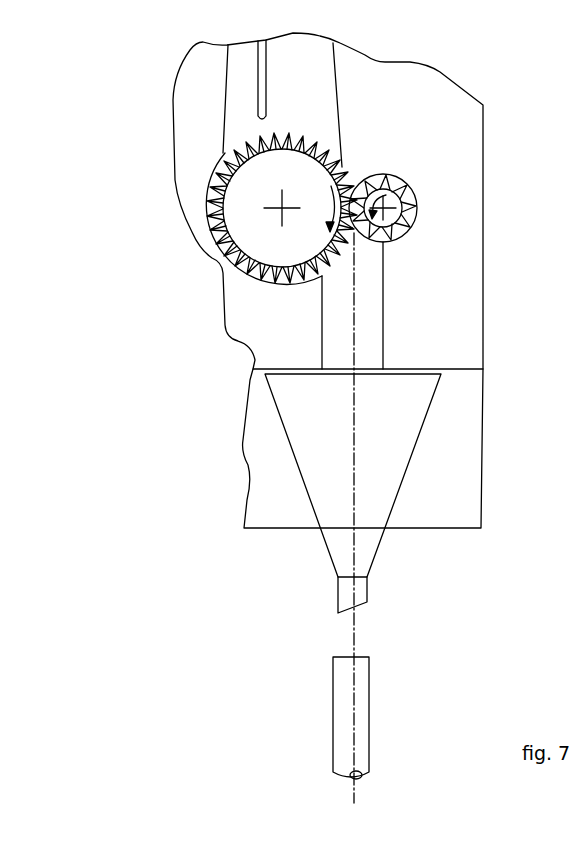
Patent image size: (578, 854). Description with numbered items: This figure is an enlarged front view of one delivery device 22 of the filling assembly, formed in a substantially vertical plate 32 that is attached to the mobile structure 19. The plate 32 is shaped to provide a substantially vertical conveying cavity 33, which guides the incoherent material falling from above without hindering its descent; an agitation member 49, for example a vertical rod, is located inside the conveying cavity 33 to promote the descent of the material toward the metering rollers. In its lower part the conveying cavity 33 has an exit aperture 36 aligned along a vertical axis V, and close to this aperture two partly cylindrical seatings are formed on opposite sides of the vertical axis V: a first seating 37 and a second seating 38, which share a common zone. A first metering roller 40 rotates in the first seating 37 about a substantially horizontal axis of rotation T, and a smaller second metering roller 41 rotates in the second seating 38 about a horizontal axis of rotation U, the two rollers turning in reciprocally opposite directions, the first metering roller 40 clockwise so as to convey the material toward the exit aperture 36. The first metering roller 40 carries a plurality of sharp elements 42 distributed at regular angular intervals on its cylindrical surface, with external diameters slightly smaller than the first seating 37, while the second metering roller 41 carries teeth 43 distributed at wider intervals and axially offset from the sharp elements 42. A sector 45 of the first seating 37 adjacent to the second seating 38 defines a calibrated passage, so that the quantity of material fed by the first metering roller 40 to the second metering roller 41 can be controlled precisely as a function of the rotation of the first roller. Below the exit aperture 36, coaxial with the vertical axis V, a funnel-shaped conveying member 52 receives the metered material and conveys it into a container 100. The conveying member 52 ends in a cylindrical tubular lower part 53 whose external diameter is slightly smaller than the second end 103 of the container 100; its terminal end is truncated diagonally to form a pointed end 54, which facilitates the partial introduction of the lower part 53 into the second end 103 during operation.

The mobile structure 19 is at (478, 410).
The delivery device 22 is at (413, 530).
The plate 32 is at (467, 134).
The conveying cavity 33 is at (335, 96).
The exit aperture 36 is at (384, 300).
The first seating 37 is at (208, 230).
The second seating 38 is at (401, 181).
The first metering roller 40 is at (236, 190).
The second metering roller 41 is at (377, 228).
The sharp elements 42 is at (289, 136).
The teeth 43 is at (400, 240).
The sector 45 is at (347, 178).
The agitation member 49 is at (262, 80).
The conveying member 52 is at (405, 458).
The lower part 53 is at (358, 590).
The pointed end 54 is at (338, 613).
The container 100 is at (362, 688).
The second end 103 is at (343, 657).
The axis of rotation T is at (282, 208).
The axis of rotation U is at (398, 210).
The vertical axis V is at (355, 336).